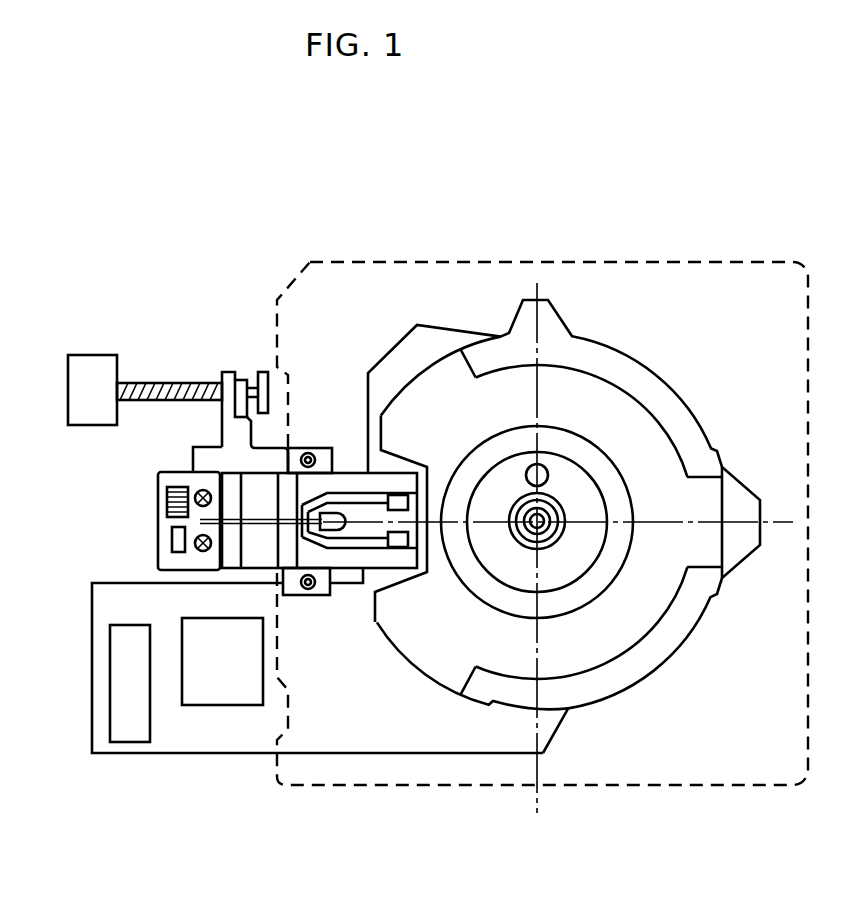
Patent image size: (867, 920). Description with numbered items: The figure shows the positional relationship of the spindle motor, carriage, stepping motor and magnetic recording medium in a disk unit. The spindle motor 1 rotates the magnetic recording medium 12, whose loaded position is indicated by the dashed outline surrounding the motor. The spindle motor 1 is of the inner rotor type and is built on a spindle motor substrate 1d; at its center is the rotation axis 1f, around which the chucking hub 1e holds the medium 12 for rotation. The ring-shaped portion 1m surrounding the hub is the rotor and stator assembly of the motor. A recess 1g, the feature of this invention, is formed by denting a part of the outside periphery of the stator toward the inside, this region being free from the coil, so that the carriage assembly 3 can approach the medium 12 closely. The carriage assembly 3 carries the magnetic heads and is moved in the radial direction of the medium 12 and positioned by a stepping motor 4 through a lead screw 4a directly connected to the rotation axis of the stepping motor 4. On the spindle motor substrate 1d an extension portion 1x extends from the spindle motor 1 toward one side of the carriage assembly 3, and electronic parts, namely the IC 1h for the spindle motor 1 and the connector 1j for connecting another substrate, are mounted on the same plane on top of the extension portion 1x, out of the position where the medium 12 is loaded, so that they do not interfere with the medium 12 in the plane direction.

The spindle motor 1 is at (647, 675).
The magnet ring 1m is at (636, 397).
The chucking hub 1e is at (580, 572).
The rotation axis 1f is at (548, 500).
The recess 1g is at (430, 480).
The spindle motor substrate 1d is at (433, 755).
The extension portion 1x is at (133, 757).
The IC 1h is at (198, 707).
The connector 1j is at (113, 673).
The magnetic recording medium 12 is at (325, 787).
The carriage assembly 3 is at (160, 490).
The stepping motor 4 is at (68, 415).
The lead screw 4a is at (165, 382).